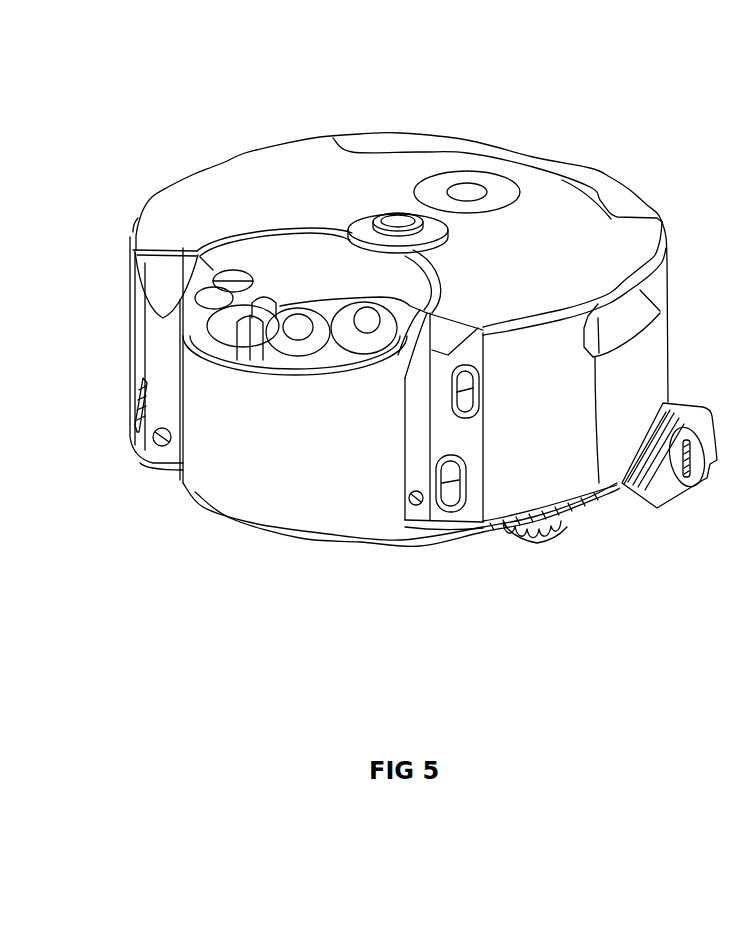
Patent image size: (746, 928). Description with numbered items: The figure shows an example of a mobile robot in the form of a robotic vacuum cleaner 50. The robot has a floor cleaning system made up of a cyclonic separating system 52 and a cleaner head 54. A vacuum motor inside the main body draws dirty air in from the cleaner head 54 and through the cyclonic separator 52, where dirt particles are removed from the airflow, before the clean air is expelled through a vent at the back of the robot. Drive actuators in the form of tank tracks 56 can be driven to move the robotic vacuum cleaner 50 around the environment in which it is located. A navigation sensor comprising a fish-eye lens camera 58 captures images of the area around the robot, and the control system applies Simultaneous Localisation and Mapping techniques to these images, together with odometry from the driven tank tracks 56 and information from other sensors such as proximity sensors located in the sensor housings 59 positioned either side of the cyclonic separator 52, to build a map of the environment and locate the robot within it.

The robotic vacuum cleaner 50 is at (556, 80).
The cyclonic separating system 52 is at (260, 495).
The cleaner head 54 is at (660, 488).
The tank tracks 56 is at (543, 540).
The fish-eye lens camera 58 is at (378, 216).
The sensor housings 59 is at (163, 345).